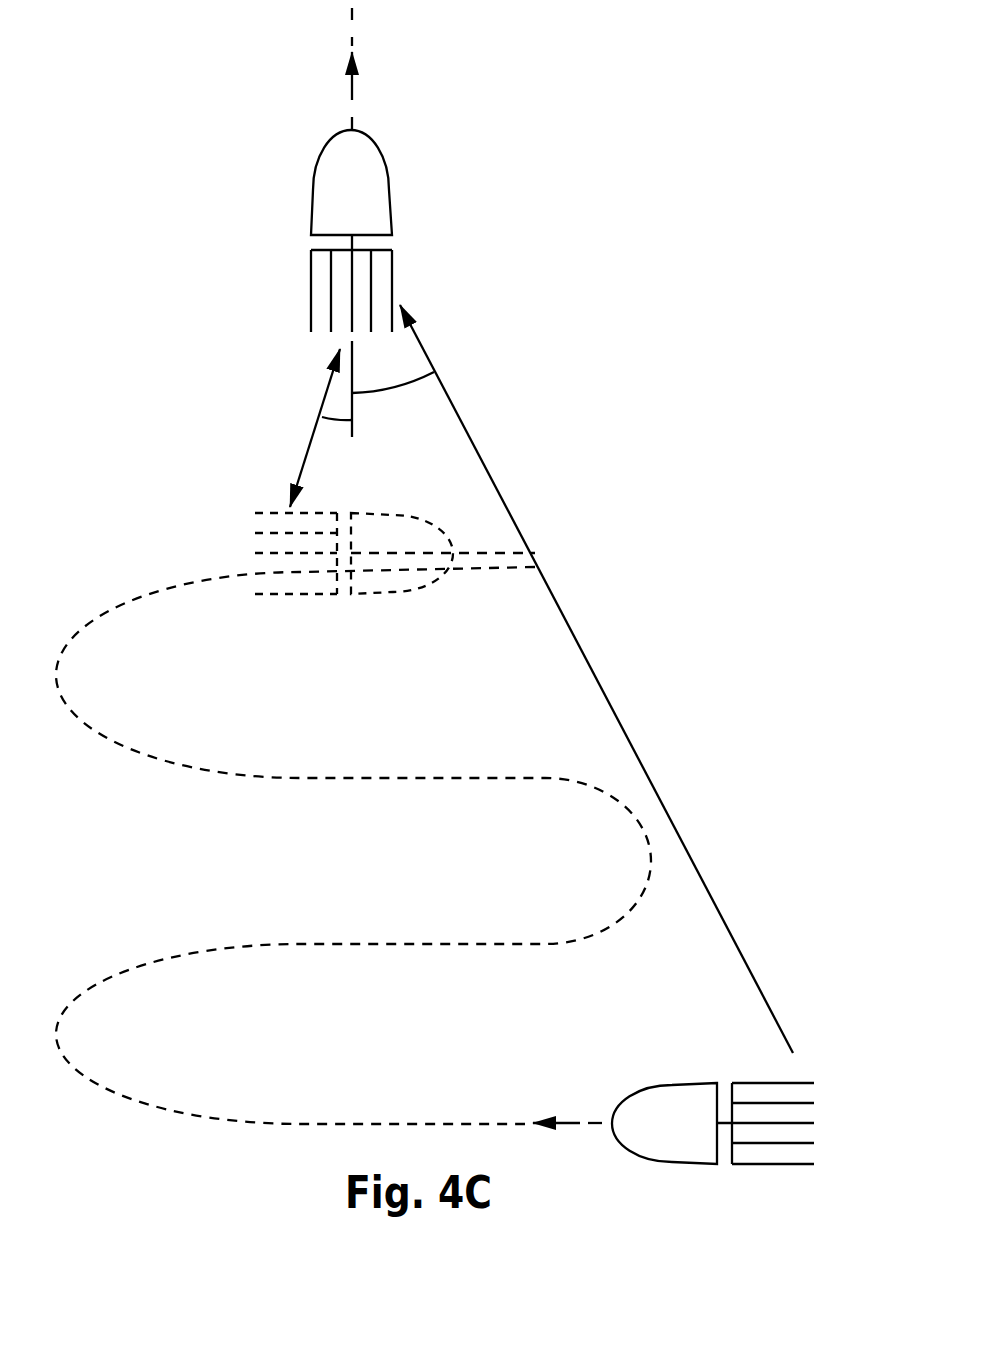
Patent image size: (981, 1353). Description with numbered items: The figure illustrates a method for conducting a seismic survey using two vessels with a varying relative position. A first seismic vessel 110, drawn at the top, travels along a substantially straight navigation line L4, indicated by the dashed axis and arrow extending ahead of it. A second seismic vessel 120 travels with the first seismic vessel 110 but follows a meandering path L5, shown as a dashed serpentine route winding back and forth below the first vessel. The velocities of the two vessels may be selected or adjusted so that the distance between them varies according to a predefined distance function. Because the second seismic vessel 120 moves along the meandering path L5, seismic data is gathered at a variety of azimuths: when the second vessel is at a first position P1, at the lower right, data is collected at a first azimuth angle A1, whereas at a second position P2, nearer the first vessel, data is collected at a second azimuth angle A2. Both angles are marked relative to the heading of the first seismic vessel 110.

The first seismic vessel 110 is at (385, 173).
The second seismic vessel 120 is at (405, 587).
The navigation line L4 is at (352, 15).
The meandering path L5 is at (470, 945).
The first azimuth angle A1 is at (572, 679).
The second azimuth angle A2 is at (321, 428).
The first position P1 is at (586, 1088).
The second position P2 is at (443, 520).